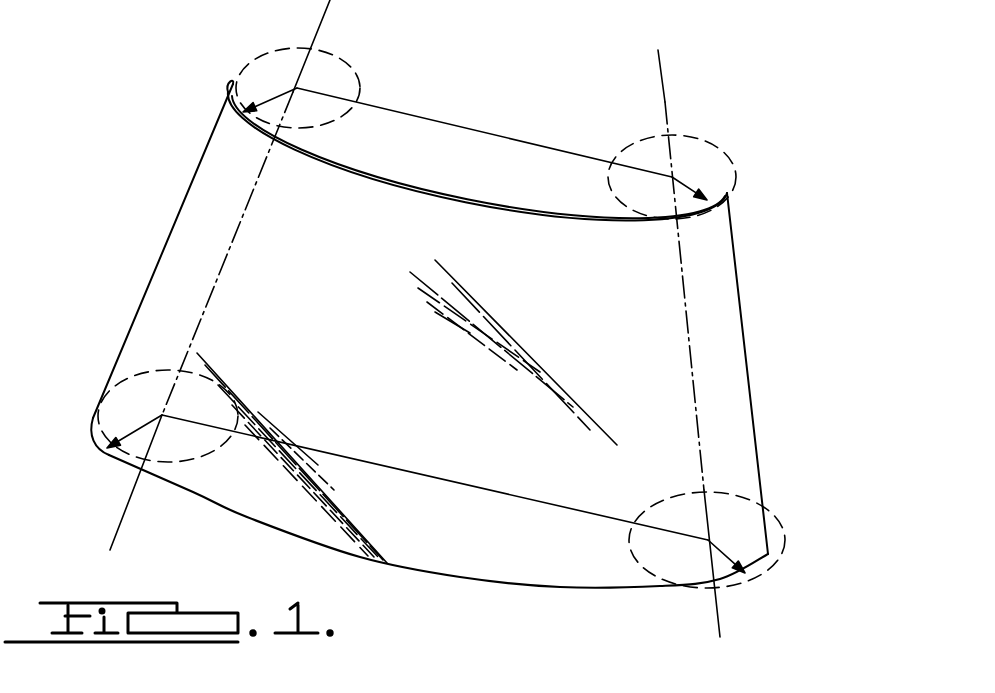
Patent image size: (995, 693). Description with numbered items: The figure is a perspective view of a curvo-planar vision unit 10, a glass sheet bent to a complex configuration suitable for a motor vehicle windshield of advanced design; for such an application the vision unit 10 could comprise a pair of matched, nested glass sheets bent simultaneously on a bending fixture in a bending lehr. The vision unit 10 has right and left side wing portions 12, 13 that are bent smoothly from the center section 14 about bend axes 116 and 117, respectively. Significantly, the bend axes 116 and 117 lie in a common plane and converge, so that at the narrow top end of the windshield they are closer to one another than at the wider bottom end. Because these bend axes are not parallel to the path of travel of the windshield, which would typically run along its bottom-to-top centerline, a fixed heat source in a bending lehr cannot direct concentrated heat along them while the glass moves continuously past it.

The vision unit 10 is at (799, 264).
The right side wing portion 12 is at (735, 370).
The left side wing portion 13 is at (175, 255).
The center section 14 is at (418, 389).
The bend axis 116 is at (720, 613).
The bend axis 117 is at (123, 517).